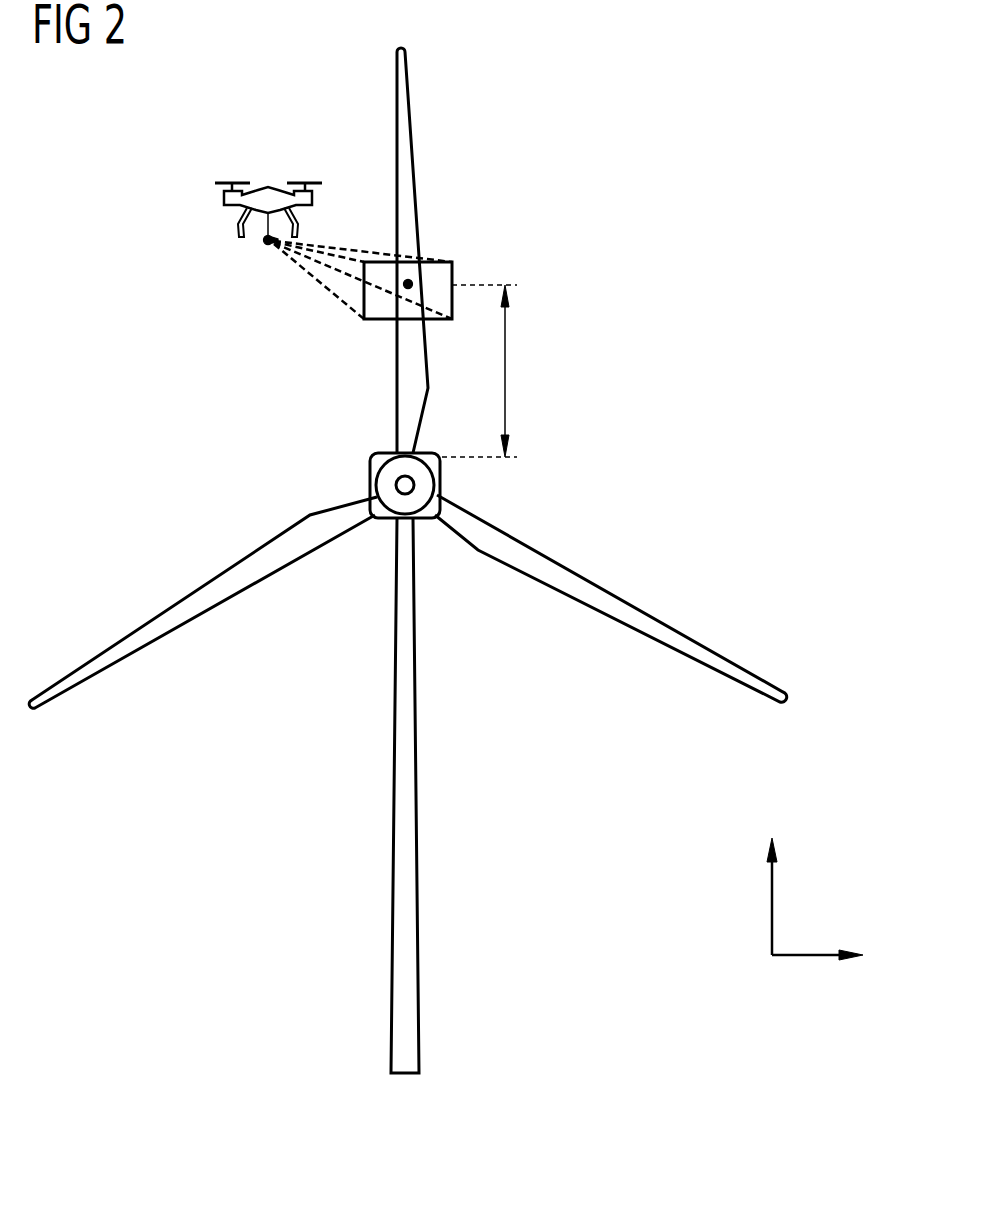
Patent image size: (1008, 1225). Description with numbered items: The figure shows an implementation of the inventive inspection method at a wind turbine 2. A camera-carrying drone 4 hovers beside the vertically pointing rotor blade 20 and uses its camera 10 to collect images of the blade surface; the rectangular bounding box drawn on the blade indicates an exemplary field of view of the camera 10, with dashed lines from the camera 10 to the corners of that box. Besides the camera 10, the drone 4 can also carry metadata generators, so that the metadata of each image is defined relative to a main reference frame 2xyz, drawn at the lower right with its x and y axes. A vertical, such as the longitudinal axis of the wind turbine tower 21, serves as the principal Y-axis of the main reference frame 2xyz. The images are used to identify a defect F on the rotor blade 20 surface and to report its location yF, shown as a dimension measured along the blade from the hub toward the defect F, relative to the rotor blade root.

The wind turbine 2 is at (407, 560).
The camera-carrying drone 4 is at (258, 191).
The camera 10 is at (266, 243).
The rotor blade 20 is at (399, 113).
The wind turbine tower 21 is at (408, 797).
The defect F is at (408, 289).
The defect location yF is at (507, 370).
The main reference frame 2xyz is at (820, 885).